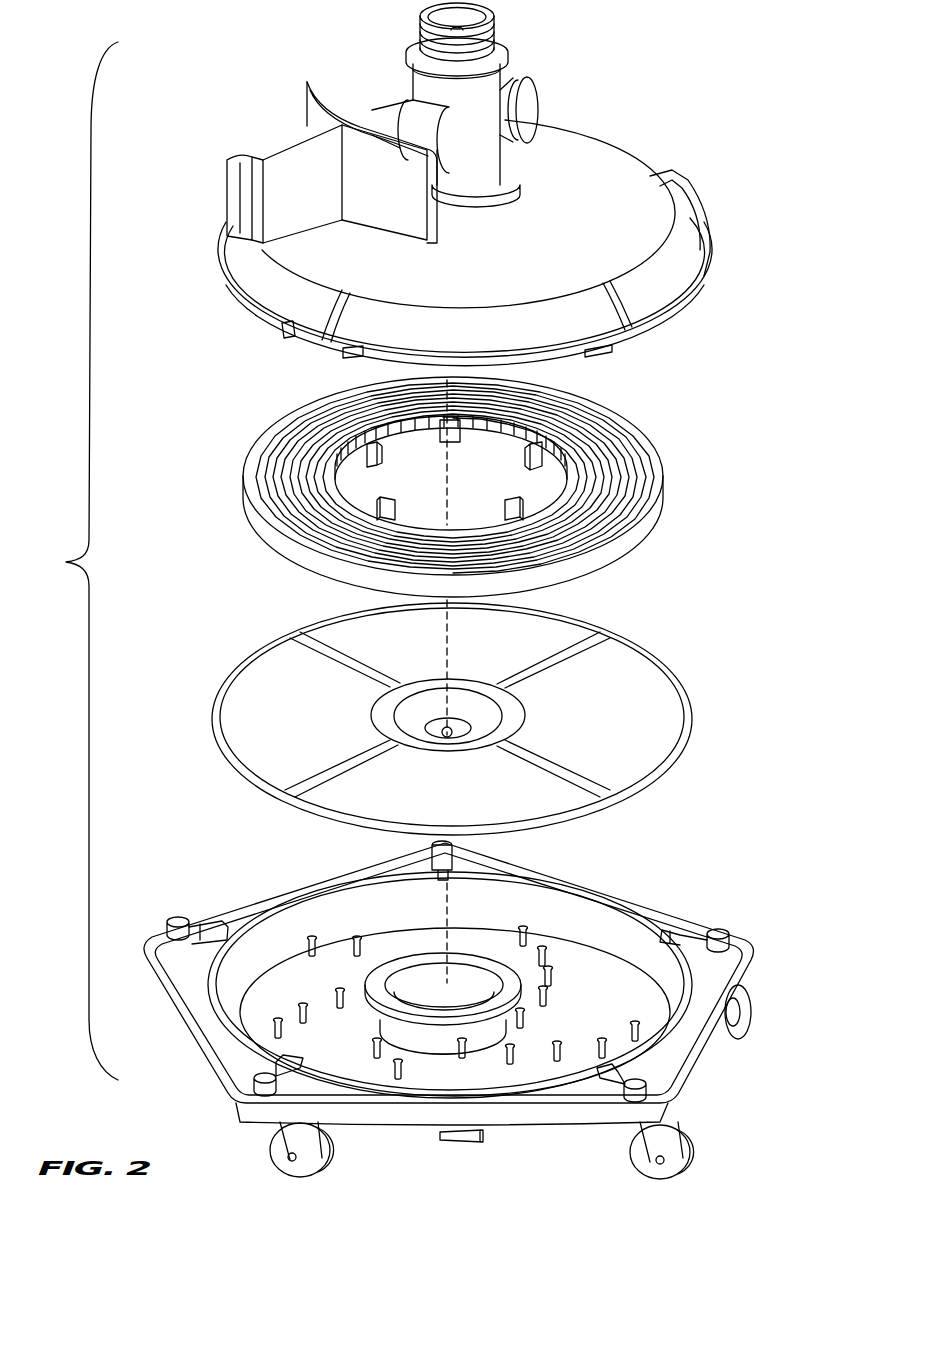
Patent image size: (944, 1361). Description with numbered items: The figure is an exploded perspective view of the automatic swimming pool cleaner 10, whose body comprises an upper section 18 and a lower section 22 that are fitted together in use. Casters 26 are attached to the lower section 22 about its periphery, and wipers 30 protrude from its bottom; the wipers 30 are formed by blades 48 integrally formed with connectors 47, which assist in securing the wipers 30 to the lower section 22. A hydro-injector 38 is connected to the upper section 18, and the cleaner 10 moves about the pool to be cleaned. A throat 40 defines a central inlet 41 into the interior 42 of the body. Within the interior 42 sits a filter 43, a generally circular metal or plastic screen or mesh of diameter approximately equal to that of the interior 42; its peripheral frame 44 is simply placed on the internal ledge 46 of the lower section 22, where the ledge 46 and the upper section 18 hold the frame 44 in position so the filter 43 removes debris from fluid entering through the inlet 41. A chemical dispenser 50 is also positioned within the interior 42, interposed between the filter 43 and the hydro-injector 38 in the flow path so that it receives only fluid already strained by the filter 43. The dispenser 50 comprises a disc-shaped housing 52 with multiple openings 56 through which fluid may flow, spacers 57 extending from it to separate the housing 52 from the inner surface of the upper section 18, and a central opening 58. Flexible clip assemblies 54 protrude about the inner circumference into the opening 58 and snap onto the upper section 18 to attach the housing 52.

The cleaner 10 is at (73, 561).
The upper section 18 is at (465, 184).
The lower section 22 is at (461, 1025).
The casters 26 is at (283, 1165).
The wipers 30 is at (492, 1142).
The hydro-injector 38 is at (537, 82).
The throat 40 is at (460, 978).
The central inlet 41 is at (427, 1010).
The interior 42 is at (582, 935).
The filter 43 is at (630, 690).
The peripheral frame 44 is at (471, 717).
The internal ledge 46 is at (692, 1000).
The connectors 47 is at (310, 950).
The blades 48 is at (463, 1142).
The dispenser 50 is at (461, 486).
The housing 52 is at (620, 413).
The clip assemblies 54 is at (387, 500).
The openings 56 is at (247, 445).
The spacers 57 is at (567, 440).
The central opening 58 is at (451, 472).